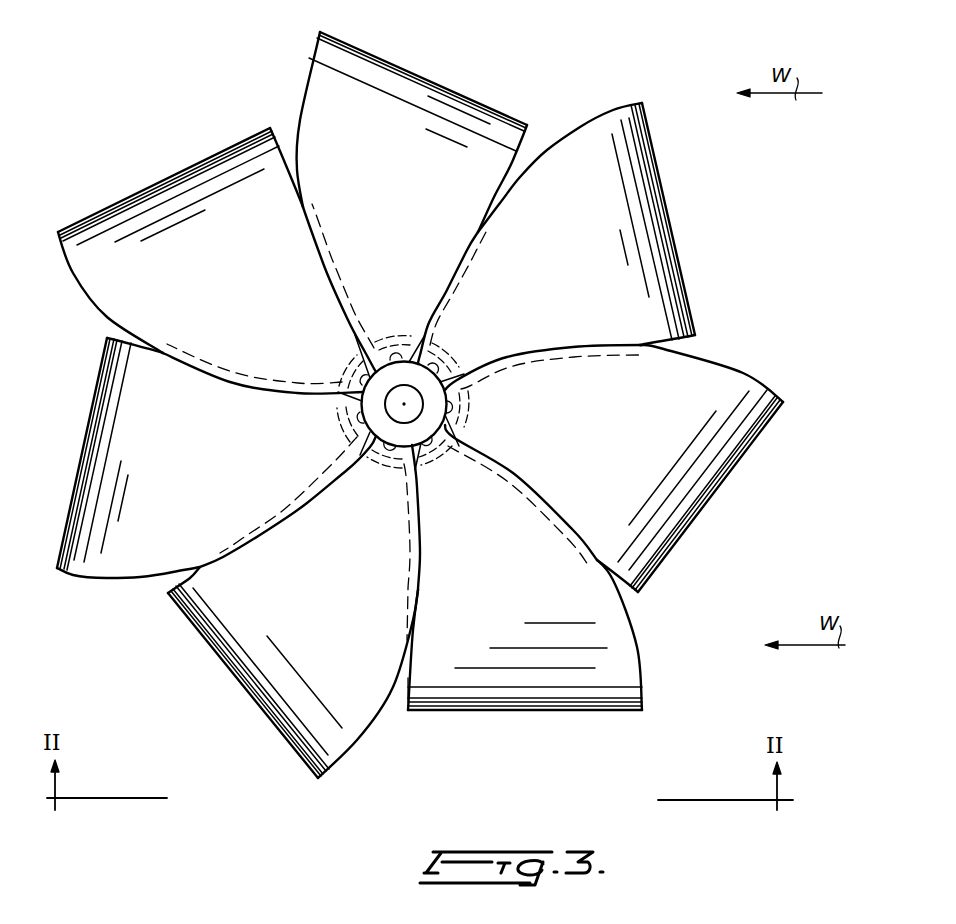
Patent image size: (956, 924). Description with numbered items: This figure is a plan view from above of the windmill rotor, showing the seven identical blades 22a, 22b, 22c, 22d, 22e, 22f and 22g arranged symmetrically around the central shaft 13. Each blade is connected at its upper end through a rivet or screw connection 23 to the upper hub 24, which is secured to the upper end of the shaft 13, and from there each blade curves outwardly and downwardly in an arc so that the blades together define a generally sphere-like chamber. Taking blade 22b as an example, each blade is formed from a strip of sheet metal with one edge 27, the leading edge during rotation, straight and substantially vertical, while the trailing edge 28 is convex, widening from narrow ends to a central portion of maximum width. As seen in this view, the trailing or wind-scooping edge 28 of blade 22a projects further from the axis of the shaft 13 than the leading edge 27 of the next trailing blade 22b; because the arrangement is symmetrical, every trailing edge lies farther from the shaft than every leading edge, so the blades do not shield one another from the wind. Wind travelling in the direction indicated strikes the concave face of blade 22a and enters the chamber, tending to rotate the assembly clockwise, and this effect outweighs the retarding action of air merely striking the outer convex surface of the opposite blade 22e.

The shaft 13 is at (411, 403).
The blade 22a is at (253, 673).
The blade 22b is at (600, 607).
The blade 22c is at (727, 384).
The blade 22d is at (652, 250).
The blade 22e is at (425, 96).
The blade 22f is at (185, 176).
The blade 22g is at (107, 388).
The rivet or screw connection 23 is at (392, 352).
The upper hub 24 is at (432, 388).
The leading edge 27 is at (203, 570).
The trailing edge 28 is at (640, 673).